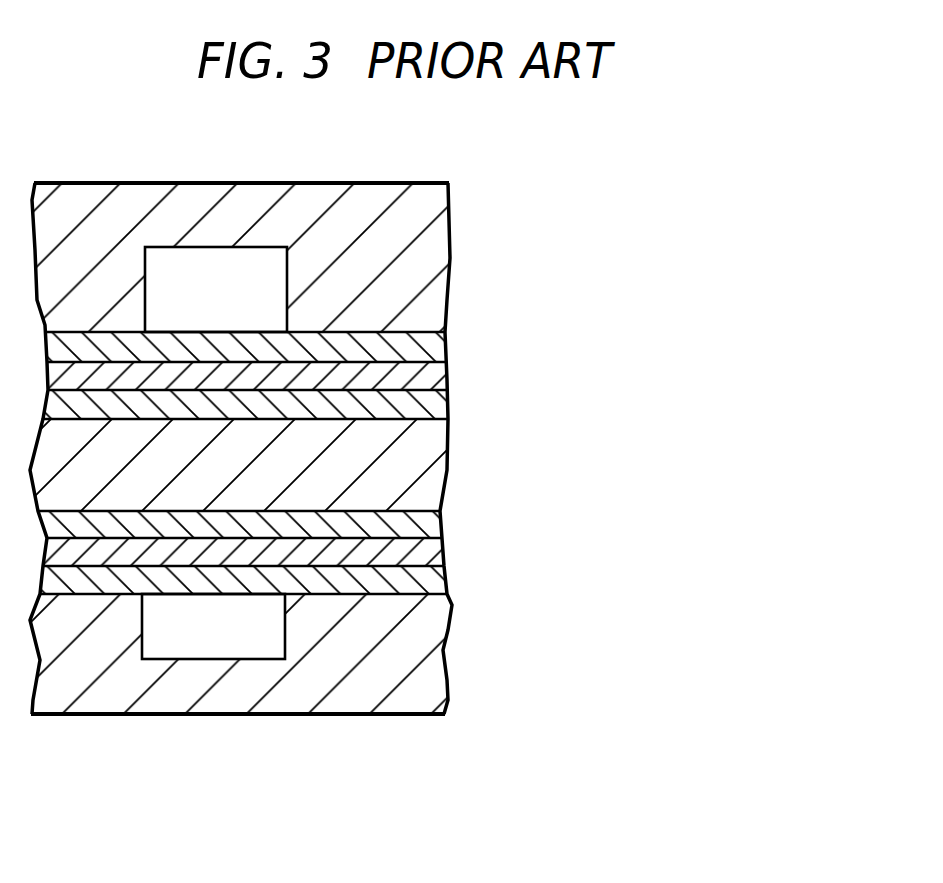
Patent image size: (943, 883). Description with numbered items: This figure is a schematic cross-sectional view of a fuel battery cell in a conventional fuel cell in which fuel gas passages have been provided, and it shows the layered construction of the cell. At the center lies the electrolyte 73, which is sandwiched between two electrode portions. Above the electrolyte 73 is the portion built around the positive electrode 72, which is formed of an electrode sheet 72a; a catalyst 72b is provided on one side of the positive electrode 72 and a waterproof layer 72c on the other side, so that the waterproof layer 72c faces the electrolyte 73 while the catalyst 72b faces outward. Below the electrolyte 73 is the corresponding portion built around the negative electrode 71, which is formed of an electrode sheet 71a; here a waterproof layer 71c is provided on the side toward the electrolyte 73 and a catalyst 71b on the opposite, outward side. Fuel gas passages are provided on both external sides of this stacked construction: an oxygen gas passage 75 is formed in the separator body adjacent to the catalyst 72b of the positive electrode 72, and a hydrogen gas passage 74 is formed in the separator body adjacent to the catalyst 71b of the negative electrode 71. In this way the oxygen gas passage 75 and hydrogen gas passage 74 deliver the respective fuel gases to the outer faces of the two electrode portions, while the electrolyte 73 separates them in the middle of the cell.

The oxygen gas passage 75 is at (272, 270).
The catalyst 72b is at (428, 342).
The positive electrode 72 is at (428, 380).
The electrode sheet 72a is at (416, 384).
The waterproof layer 72c is at (428, 407).
The electrolyte 73 is at (423, 460).
The waterproof layer 71c is at (423, 521).
The negative electrode 71 is at (423, 552).
The electrode sheet 71a is at (410, 566).
The catalyst 71b is at (423, 582).
The hydrogen gas passage 74 is at (285, 628).